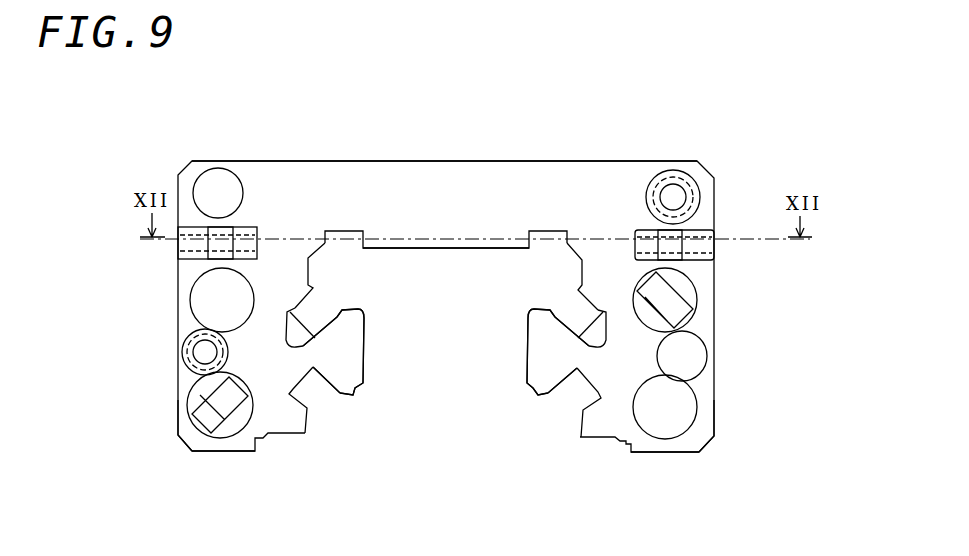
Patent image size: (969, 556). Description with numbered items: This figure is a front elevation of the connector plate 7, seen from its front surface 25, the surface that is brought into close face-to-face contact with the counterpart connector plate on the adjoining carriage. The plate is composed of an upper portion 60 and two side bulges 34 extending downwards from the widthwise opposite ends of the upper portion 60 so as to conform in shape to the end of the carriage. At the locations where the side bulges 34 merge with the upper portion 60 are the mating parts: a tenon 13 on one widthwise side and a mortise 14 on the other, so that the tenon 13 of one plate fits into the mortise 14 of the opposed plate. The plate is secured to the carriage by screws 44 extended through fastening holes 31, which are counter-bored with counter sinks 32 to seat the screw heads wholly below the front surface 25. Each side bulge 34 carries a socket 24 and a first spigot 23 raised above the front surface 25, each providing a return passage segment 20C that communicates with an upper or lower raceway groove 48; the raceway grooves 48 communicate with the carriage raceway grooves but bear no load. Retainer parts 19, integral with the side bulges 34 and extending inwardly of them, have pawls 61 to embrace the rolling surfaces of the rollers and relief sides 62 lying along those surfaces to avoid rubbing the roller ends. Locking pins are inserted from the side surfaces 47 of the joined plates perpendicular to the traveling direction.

The connector plate 7 is at (506, 156).
The upper portion 60 is at (450, 173).
The front surface 25 is at (401, 188).
The counter sink 32 is at (219, 178).
The fastening hole 31 is at (674, 196).
The screw 44 is at (690, 184).
The tenon 13 is at (216, 240).
The mortise 14 is at (677, 247).
The socket 24 is at (191, 295).
The first spigot 23 is at (238, 388).
The return passage segment 20C is at (217, 407).
The side surface 47 is at (177, 400).
The side bulge 34 is at (270, 376).
The relief side 62 is at (290, 311).
The raceway groove 48 is at (309, 328).
The pawl 61 is at (346, 309).
The retainer part 19 is at (346, 370).